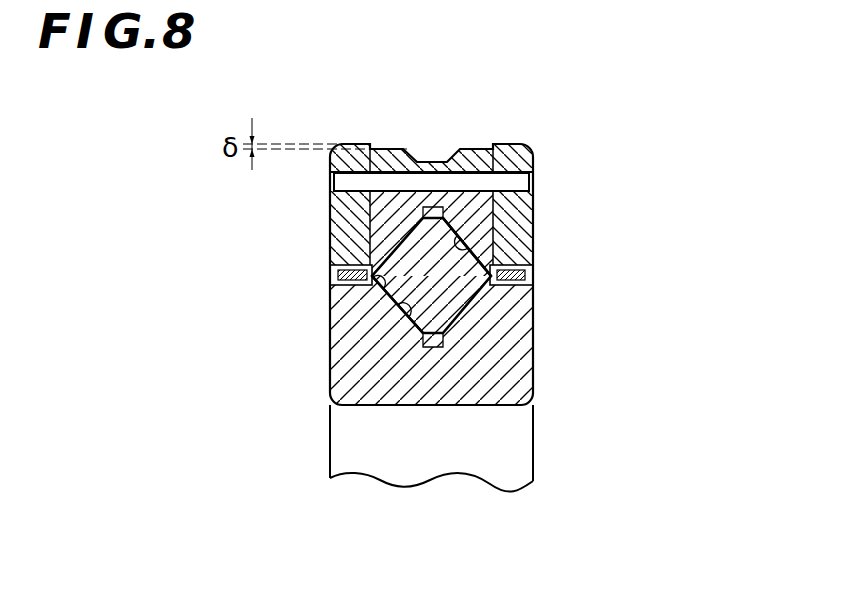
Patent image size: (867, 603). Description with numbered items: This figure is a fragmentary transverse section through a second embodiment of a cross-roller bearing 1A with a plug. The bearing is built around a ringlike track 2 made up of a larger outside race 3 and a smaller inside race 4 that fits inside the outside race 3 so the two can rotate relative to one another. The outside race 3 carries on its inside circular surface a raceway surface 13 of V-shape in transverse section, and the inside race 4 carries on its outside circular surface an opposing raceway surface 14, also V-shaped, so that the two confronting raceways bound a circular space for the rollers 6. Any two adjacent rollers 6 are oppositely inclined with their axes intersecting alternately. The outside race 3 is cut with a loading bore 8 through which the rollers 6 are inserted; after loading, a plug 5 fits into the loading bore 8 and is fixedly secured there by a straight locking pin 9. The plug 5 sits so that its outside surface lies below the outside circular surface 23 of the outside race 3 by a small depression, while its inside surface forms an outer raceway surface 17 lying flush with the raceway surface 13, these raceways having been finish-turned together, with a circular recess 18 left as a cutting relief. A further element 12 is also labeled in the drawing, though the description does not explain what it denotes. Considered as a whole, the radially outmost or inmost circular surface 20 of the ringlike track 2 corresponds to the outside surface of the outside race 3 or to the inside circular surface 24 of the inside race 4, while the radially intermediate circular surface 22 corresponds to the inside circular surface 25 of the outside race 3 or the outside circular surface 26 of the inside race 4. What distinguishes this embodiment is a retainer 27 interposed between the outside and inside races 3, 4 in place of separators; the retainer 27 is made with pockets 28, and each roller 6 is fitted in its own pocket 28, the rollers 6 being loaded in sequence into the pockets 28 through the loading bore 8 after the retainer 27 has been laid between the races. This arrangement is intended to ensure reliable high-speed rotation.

The cross-roller bearing 1A is at (549, 157).
The ringlike track 2 is at (416, 294).
The outside race 3 is at (347, 222).
The inside race 4 is at (490, 358).
The plug 5 is at (472, 158).
The roller 6 is at (438, 245).
The loading bore 8 is at (486, 150).
The locking pin 9 is at (390, 183).
The bottom surface portion 12 is at (435, 347).
The raceway surface 13 is at (495, 248).
The raceway surface 14 is at (403, 326).
The outer raceway surface 17 is at (553, 235).
The circular recess 18 is at (433, 206).
The radially outmost or inmost circular surface 20 is at (362, 283).
The radially intermediate circular surface 22 is at (418, 285).
The outside circular surface 23 is at (357, 143).
The inside circular surface 24 is at (387, 405).
The inside circular surface 25 is at (577, 290).
The outside circular surface 26 is at (333, 268).
The retainer 27 is at (533, 272).
The pocket 28 is at (400, 307).